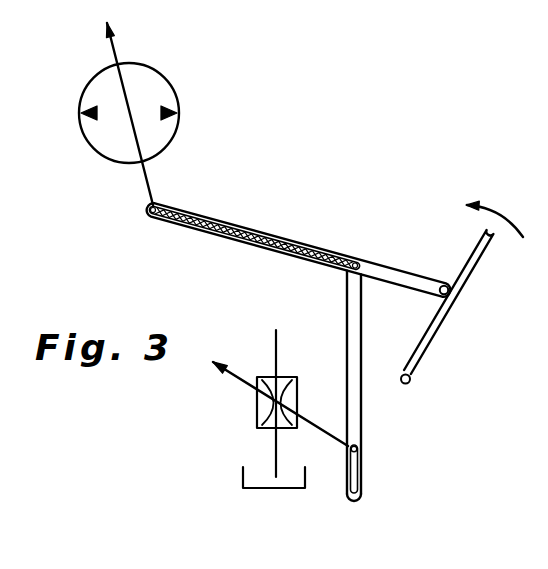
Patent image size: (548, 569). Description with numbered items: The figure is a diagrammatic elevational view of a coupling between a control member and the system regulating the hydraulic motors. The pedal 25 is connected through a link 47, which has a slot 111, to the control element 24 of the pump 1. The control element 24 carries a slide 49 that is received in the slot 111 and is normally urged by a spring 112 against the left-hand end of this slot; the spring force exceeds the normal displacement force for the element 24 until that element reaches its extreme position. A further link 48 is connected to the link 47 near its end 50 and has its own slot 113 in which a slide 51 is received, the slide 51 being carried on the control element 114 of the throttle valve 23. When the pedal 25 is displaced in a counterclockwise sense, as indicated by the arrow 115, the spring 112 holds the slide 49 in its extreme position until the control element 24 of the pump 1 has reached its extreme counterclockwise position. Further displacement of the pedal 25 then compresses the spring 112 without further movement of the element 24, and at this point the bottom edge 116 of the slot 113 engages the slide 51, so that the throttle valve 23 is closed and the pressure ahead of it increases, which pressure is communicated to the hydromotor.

The pump 1 is at (154, 70).
The control element 24 is at (112, 44).
The link 47 is at (280, 252).
The further link 48 is at (355, 331).
The slide 49 is at (150, 210).
The slot end 50 is at (358, 261).
The slide 51 is at (358, 449).
The throttle valve 23 is at (257, 413).
The pedal 25 is at (473, 268).
The slot 111 is at (232, 223).
The spring 112 is at (216, 234).
The slot 113 is at (358, 473).
The control element 114 is at (240, 378).
The arrow 115 is at (496, 215).
The bottom edge 116 is at (347, 496).